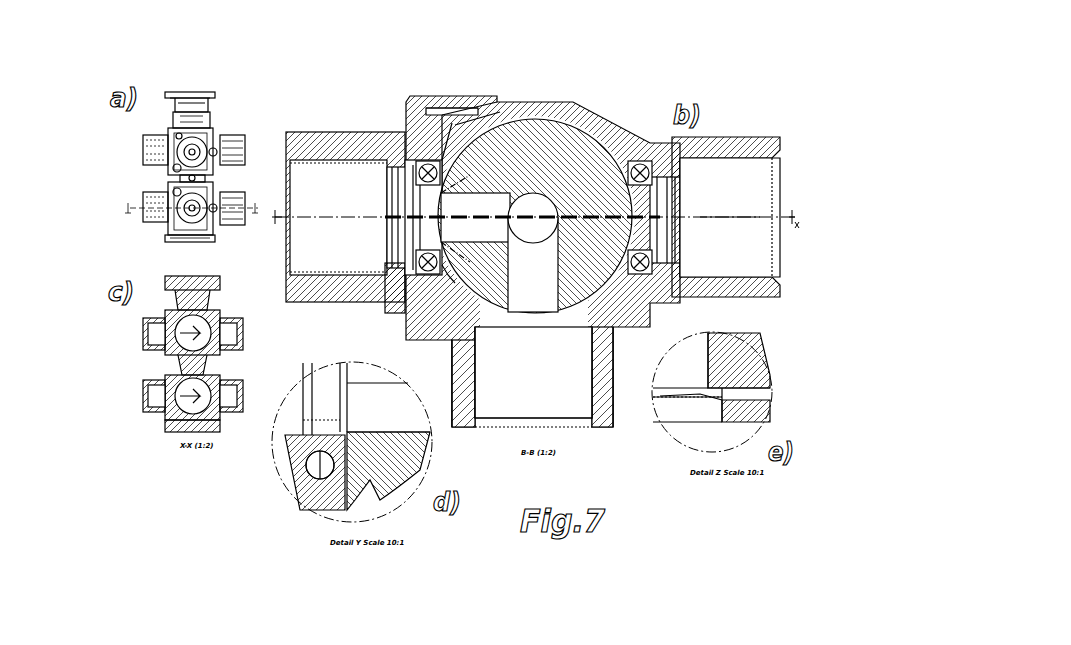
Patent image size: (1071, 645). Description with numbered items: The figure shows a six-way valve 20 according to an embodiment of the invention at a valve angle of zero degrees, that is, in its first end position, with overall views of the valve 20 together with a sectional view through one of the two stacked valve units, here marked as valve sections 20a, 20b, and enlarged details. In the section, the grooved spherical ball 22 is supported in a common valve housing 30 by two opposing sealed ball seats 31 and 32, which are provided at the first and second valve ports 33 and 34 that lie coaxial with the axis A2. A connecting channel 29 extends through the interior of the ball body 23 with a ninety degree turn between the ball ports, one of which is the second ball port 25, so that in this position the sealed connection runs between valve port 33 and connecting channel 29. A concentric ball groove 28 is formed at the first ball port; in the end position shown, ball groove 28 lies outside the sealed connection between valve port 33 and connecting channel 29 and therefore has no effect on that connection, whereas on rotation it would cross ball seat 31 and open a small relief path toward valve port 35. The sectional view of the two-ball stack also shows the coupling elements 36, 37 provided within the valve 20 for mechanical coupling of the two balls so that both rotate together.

The 6-way valve 20 is at (228, 118).
The first valve 20a is at (136, 148).
The second valve body 20b is at (592, 96).
The spherical ball 22 is at (494, 130).
The ball body 23 is at (546, 150).
The second ball port 25 is at (705, 397).
The ball groove 28 is at (447, 272).
The connecting channel 29 is at (690, 365).
The common valve housing 30 is at (523, 108).
The ball seat 31 is at (430, 176).
The ball seat 32 is at (640, 172).
The first valve port 33 is at (338, 188).
The second valve port 34 is at (738, 254).
The valve port 35 is at (565, 380).
The coupling element 36 is at (195, 306).
The coupling element 37 is at (197, 372).
The axis A2 is at (716, 215).